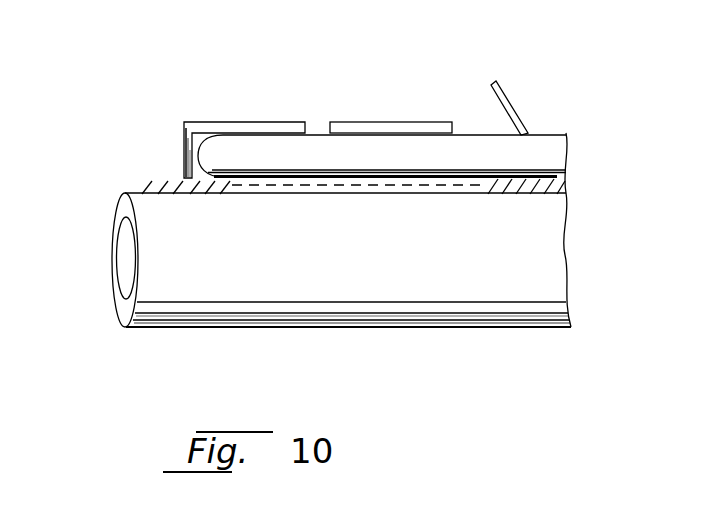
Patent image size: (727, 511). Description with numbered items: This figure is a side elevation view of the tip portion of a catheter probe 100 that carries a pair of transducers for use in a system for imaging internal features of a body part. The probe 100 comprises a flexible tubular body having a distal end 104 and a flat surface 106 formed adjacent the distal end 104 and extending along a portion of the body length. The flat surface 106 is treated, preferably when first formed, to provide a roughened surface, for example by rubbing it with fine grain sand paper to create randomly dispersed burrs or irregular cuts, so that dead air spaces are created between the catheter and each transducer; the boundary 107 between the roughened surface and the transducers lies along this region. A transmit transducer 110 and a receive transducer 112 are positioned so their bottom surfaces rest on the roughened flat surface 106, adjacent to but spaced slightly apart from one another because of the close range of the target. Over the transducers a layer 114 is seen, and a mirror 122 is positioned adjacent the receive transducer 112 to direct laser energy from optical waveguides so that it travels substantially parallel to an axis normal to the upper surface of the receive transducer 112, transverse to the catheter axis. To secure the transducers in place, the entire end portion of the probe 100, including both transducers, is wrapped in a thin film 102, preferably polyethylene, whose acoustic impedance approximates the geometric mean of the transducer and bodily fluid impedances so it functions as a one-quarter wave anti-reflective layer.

The catheter probe 100 is at (180, 338).
The thin film 102 is at (547, 253).
The distal end 104 is at (122, 210).
The flat surface 106 is at (132, 193).
The interface line 107 is at (150, 182).
The transmit transducer 110 is at (225, 122).
The receive transducer 112 is at (382, 122).
The sensor layer 114 is at (558, 150).
The mirror 122 is at (508, 98).